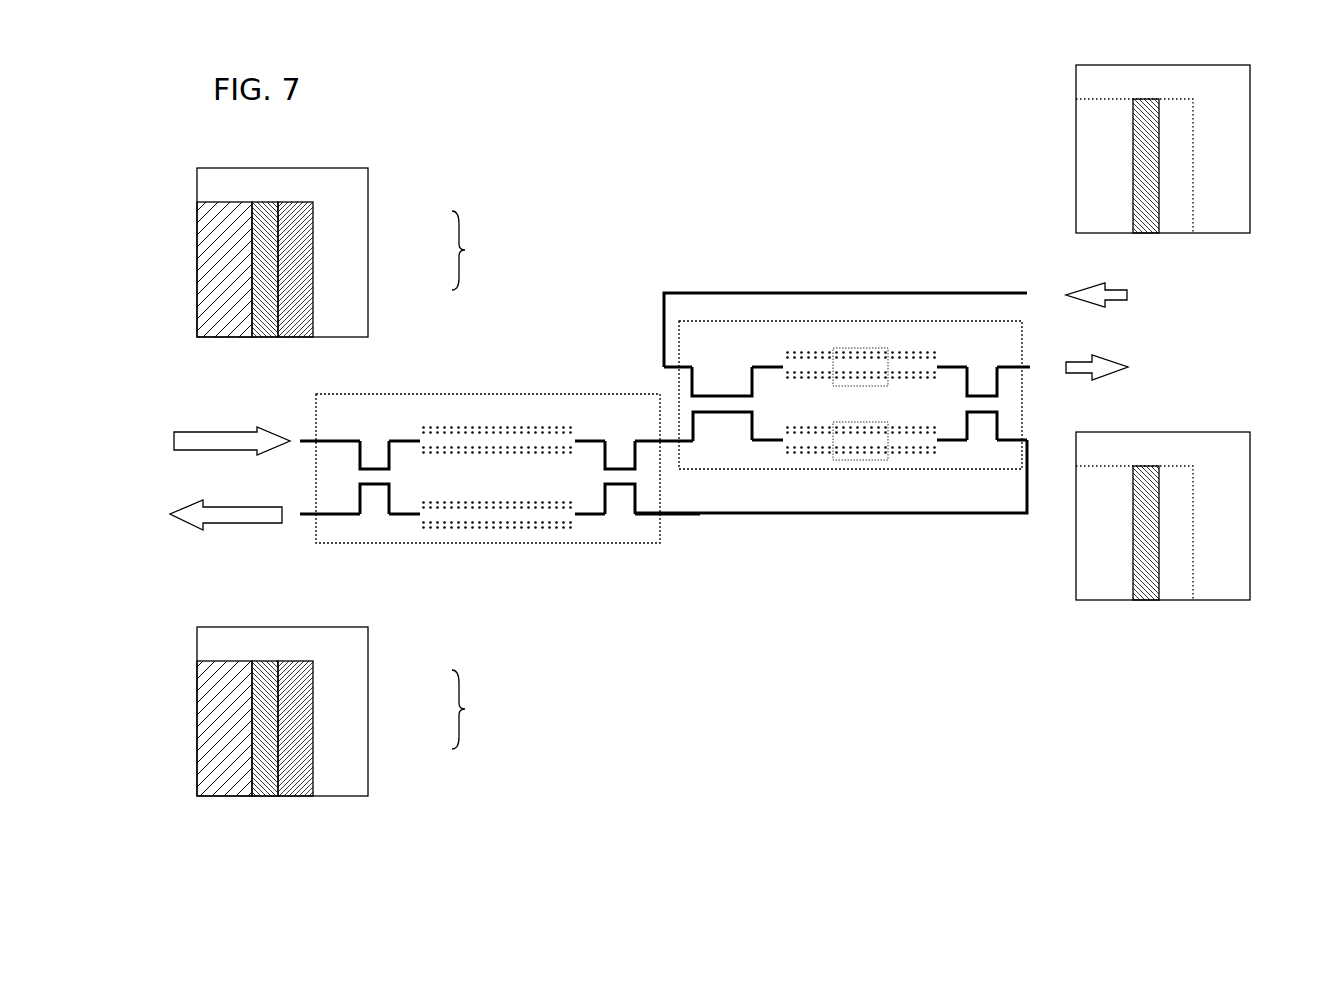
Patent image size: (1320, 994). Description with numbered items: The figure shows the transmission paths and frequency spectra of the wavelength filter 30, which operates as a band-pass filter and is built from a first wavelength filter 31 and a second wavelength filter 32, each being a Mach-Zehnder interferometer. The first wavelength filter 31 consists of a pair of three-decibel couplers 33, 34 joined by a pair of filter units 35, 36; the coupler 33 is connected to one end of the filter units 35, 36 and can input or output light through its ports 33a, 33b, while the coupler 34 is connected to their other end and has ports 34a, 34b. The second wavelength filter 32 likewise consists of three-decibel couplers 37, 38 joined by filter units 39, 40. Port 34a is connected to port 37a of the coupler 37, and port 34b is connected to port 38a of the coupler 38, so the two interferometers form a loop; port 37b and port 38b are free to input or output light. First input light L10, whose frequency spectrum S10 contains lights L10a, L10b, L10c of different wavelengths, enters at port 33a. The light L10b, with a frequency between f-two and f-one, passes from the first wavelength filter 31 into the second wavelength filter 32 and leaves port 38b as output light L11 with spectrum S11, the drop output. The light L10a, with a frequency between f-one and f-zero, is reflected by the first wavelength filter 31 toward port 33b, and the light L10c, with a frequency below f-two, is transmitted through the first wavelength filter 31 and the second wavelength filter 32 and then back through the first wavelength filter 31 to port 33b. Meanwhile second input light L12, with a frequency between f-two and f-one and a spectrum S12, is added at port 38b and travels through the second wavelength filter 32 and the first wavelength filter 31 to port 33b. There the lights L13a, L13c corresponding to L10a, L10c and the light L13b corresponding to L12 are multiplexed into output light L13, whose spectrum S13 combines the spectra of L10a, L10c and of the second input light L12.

The wavelength filter 30 is at (815, 608).
The first wavelength filter 31 is at (464, 552).
The second wavelength filter 32 is at (787, 312).
The 3 dB coupler 33 is at (364, 520).
The port 33a is at (318, 438).
The port 33b is at (332, 520).
The 3 dB coupler 34 is at (609, 538).
The port 34a is at (649, 430).
The port 34b is at (645, 540).
The filter unit 35 is at (433, 426).
The filter unit 36 is at (517, 530).
The 3 dB coupler 37 is at (692, 430).
The port 37a is at (688, 442).
The port 37b is at (664, 345).
The 3 dB coupler 38 is at (973, 460).
The port 38a is at (1010, 460).
The port 38b is at (1018, 352).
The filter unit 39 is at (935, 351).
The filter unit 40 is at (928, 460).
The first input light L10 is at (221, 432).
The light L10a is at (297, 282).
The light L10b is at (262, 260).
The light L10c is at (250, 227).
The output light L11 is at (1148, 545).
The second input light L12 is at (1148, 178).
The output light L13 is at (218, 523).
The light L13a is at (297, 741).
The light L13b is at (262, 719).
The light L13c is at (250, 686).
The frequency spectrum S10 is at (350, 168).
The frequency spectrum S11 is at (1076, 598).
The frequency spectrum S12 is at (1076, 67).
The frequency spectrum S13 is at (350, 627).